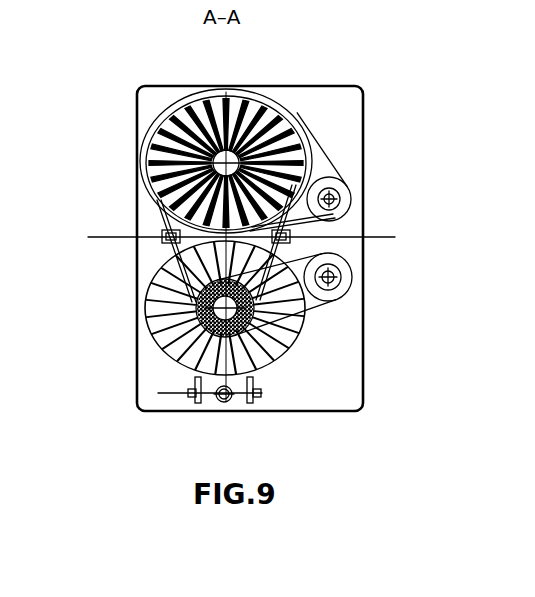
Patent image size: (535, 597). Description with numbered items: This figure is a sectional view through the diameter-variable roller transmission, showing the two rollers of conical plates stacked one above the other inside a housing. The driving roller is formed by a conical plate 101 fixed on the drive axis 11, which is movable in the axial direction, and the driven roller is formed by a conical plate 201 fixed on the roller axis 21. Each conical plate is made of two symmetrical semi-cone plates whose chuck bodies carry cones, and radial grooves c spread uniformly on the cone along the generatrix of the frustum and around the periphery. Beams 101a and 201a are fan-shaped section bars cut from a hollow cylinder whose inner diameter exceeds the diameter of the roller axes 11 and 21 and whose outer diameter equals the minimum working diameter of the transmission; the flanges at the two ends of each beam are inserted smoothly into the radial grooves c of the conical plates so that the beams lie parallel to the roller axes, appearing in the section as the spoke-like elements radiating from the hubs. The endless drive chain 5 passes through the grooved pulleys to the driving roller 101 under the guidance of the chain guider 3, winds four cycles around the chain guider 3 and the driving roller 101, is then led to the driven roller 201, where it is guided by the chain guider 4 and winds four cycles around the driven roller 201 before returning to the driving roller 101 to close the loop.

The conical plate 201 is at (187, 123).
The roller axis 21 is at (184, 128).
The beam 201a is at (150, 180).
The endless drive chain 5 is at (158, 212).
The beam 101a is at (185, 295).
The drive axis 11 is at (183, 305).
The conical plate 101 is at (182, 352).
The chain guider 4 is at (343, 198).
The chain guider 3 is at (347, 272).
The radial groove c is at (300, 330).